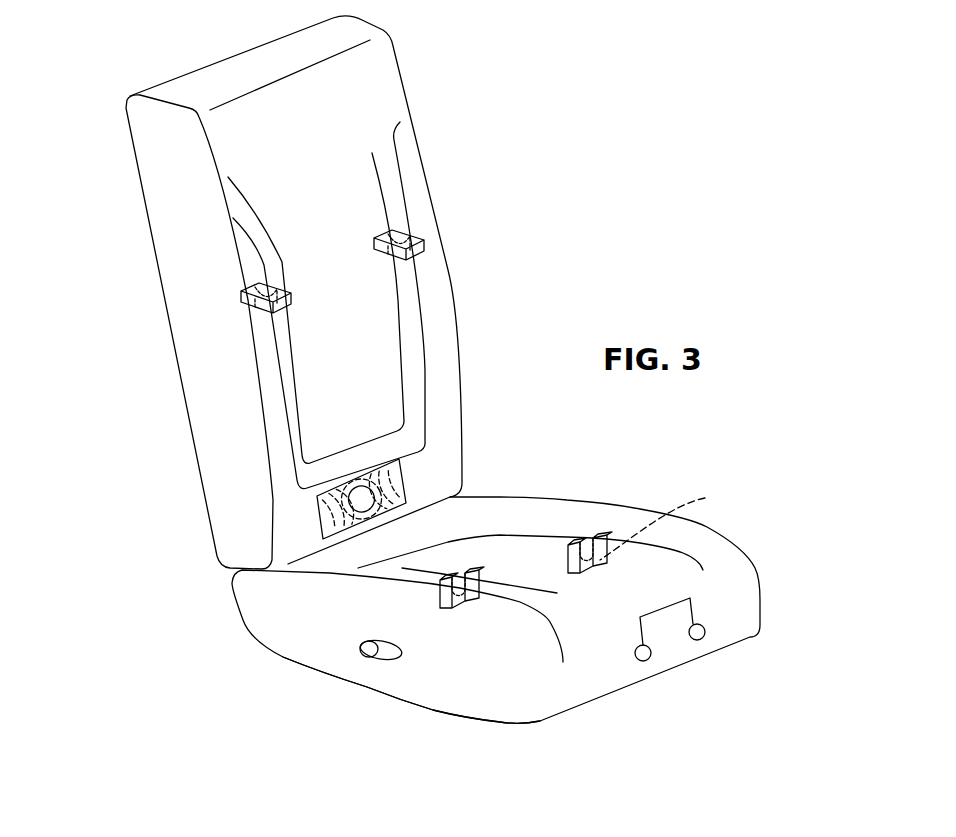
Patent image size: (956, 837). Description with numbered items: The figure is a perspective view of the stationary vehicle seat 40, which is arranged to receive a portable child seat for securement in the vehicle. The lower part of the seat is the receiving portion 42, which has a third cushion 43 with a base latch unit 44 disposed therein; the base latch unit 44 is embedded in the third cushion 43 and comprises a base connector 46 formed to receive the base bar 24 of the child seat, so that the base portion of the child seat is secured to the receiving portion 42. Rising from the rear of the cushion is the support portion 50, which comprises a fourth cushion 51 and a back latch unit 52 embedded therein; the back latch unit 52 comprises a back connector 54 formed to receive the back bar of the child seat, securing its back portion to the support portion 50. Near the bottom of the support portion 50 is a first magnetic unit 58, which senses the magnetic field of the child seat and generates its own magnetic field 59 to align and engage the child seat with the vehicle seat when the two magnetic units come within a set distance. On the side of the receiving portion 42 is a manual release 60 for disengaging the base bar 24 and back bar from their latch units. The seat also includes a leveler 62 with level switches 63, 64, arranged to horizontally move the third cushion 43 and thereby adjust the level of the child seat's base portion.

The base bar 24 is at (460, 376).
The stationary vehicle seat 40 is at (166, 43).
The receiving portion 42 is at (740, 594).
The third cushion 43 is at (463, 662).
The base latch unit 44 is at (590, 538).
The base connector 46 is at (667, 523).
The support portion 50 is at (177, 147).
The fourth cushion 51 is at (190, 277).
The back latch unit 52 is at (237, 298).
The back connector 54 is at (242, 285).
The first magnetic unit 58 is at (322, 527).
The magnetic field 59 is at (378, 490).
The manual release 60 is at (368, 650).
The leveler 62 is at (665, 607).
The level switch 63 is at (705, 630).
The level switch 64 is at (652, 653).